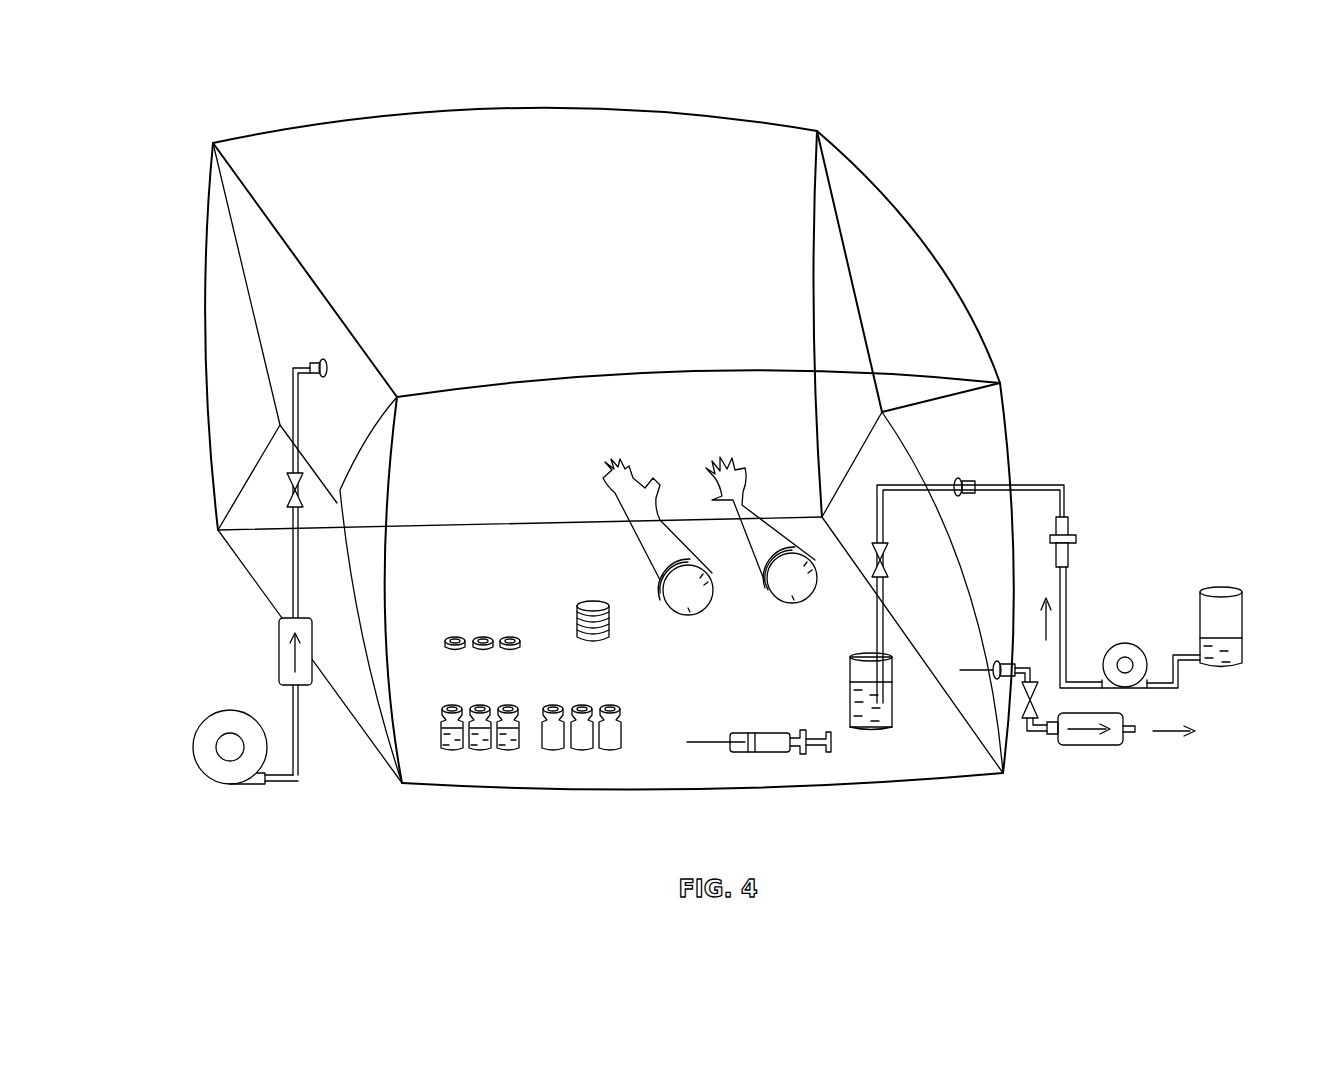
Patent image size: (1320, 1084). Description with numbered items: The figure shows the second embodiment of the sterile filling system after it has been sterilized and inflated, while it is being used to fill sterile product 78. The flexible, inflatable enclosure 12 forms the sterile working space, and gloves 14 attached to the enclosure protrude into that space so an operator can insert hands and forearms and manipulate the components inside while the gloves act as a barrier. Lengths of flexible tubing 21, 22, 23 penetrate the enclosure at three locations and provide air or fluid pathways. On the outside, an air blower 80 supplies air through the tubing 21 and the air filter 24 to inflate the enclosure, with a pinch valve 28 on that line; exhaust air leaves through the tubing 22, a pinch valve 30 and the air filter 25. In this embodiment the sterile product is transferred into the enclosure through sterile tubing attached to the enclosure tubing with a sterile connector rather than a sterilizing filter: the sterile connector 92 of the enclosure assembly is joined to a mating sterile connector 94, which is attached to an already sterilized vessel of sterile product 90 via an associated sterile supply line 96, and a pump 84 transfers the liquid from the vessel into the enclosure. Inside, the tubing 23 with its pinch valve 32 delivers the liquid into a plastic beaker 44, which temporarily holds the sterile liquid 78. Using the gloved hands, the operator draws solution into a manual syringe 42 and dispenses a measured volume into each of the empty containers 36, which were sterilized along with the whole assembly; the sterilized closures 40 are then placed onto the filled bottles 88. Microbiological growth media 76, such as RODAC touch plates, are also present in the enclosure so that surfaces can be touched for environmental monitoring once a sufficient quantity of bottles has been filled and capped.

The flexible inflatable enclosure 12 is at (933, 255).
The gloves 14 is at (605, 485).
The flexible tubing 21 is at (300, 413).
The flexible tubing 22 is at (1030, 733).
The flexible tubing 23 is at (914, 485).
The air filter 24 is at (279, 660).
The air filter 25 is at (1093, 748).
The pinch valve 28 is at (287, 500).
The pinch valve 30 is at (1058, 685).
The pinch valve 32 is at (890, 570).
The containers 36 is at (623, 730).
The closures 40 is at (483, 638).
The syringe 42 is at (780, 752).
The beaker 44 is at (892, 712).
The microbiological growth media 76 is at (593, 603).
The sterile liquid 78 is at (880, 729).
The air blower 80 is at (240, 786).
The pump 84 is at (1122, 645).
The filled bottles 88 is at (480, 748).
The vessel of sterile product 90 is at (1232, 592).
The sterile connector 92 is at (1070, 522).
The mating sterile connector 94 is at (1070, 560).
The sterile supply line 96 is at (1180, 686).